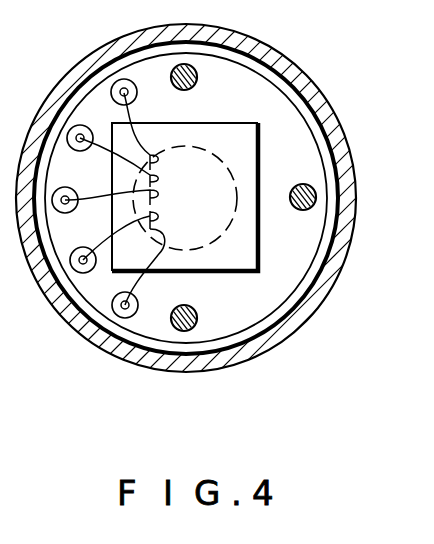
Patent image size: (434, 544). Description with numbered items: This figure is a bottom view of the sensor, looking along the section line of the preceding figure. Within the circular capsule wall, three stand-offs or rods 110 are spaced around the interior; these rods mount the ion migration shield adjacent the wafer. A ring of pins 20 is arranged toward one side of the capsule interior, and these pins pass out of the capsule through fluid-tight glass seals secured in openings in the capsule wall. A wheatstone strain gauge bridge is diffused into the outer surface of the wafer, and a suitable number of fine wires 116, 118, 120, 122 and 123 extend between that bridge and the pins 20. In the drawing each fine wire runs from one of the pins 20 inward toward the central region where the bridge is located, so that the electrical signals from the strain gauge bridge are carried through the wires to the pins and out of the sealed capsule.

The stand-offs or rods 110 is at (192, 64).
The pins 20 is at (123, 93).
The fine wire 116 is at (131, 289).
The fine wire 118 is at (158, 216).
The fine wire 120 is at (100, 200).
The fine wire 122 is at (104, 158).
The fine wire 123 is at (139, 106).